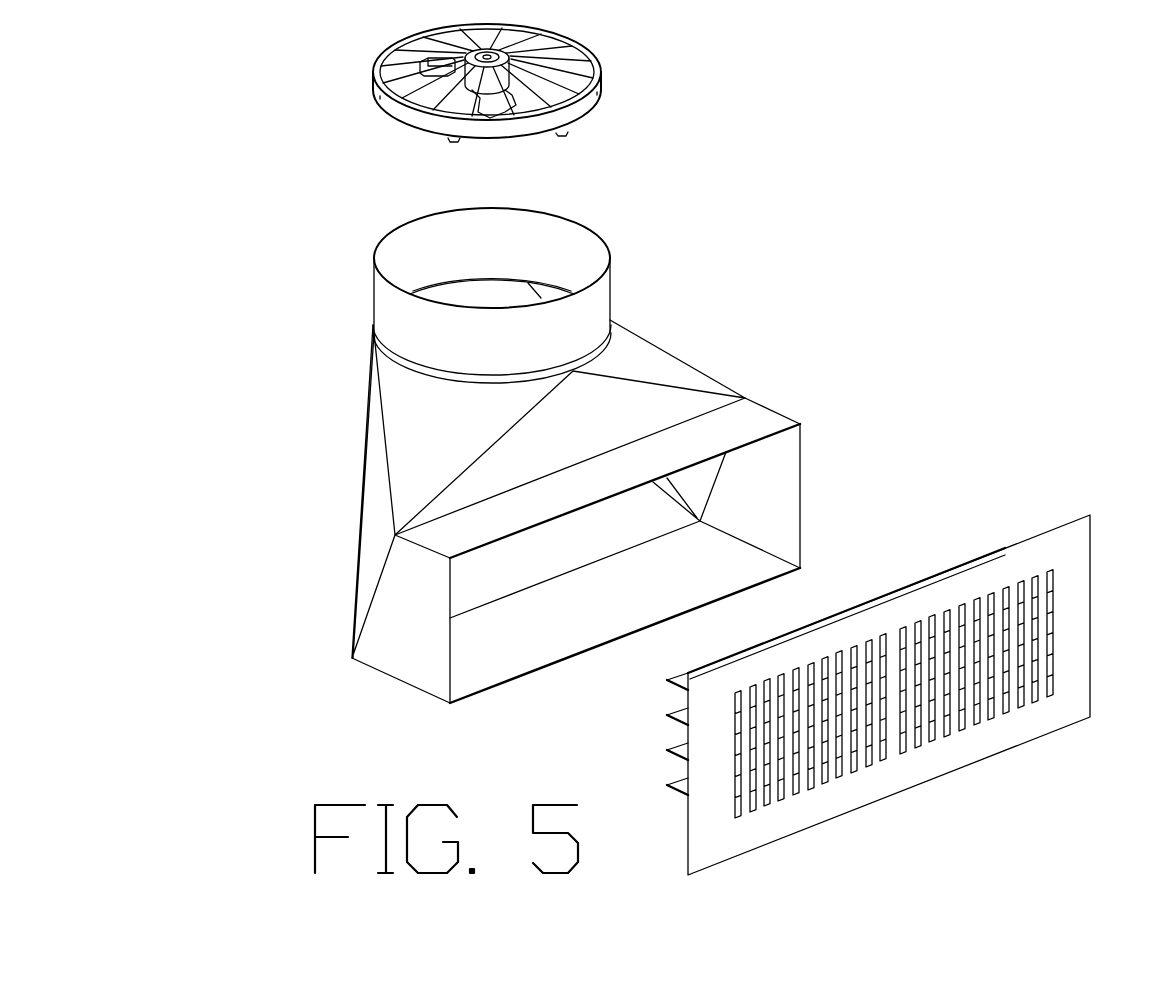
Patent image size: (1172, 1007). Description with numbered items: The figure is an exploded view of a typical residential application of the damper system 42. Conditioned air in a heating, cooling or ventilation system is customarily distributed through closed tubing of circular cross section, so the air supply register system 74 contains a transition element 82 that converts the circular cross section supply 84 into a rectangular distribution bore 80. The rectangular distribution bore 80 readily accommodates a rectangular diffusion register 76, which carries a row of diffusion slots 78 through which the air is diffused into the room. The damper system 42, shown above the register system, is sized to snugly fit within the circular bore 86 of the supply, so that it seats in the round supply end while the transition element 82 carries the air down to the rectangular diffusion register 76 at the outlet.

The damper system 42 is at (617, 122).
The air supply register system 74 is at (601, 430).
The rectangular diffusion register 76 is at (790, 667).
The diffusion slots 78 is at (733, 778).
The rectangular distribution bore 80 is at (662, 517).
The transition element 82 is at (397, 407).
The circular cross section supply 84 is at (540, 270).
The circular bore 86 is at (485, 295).